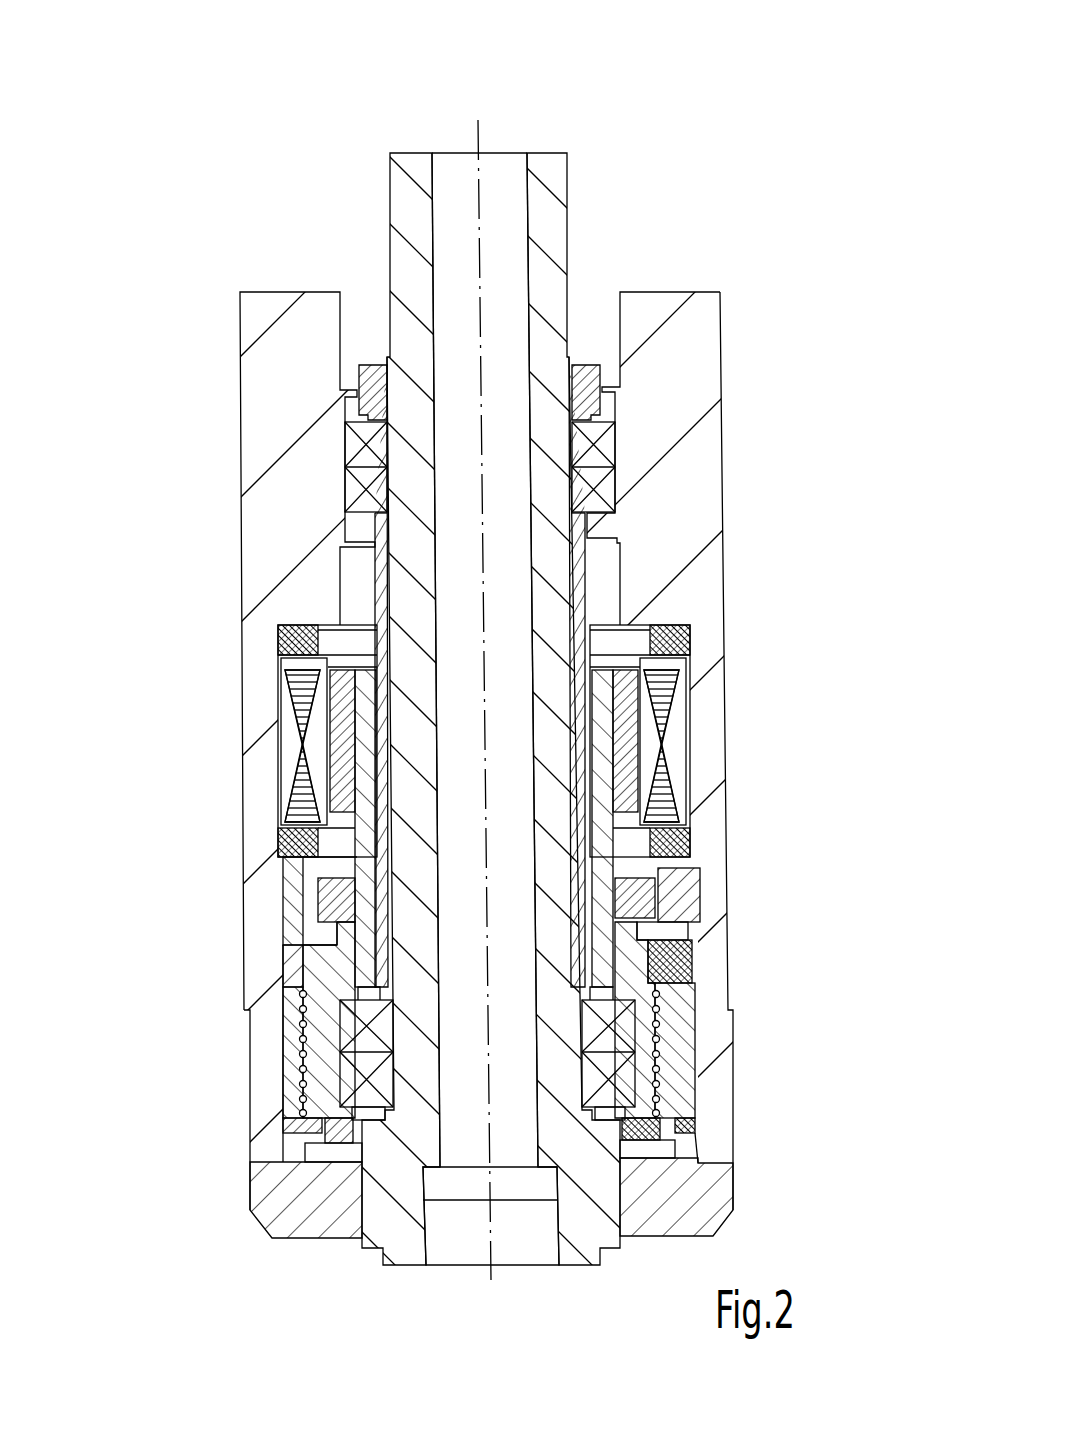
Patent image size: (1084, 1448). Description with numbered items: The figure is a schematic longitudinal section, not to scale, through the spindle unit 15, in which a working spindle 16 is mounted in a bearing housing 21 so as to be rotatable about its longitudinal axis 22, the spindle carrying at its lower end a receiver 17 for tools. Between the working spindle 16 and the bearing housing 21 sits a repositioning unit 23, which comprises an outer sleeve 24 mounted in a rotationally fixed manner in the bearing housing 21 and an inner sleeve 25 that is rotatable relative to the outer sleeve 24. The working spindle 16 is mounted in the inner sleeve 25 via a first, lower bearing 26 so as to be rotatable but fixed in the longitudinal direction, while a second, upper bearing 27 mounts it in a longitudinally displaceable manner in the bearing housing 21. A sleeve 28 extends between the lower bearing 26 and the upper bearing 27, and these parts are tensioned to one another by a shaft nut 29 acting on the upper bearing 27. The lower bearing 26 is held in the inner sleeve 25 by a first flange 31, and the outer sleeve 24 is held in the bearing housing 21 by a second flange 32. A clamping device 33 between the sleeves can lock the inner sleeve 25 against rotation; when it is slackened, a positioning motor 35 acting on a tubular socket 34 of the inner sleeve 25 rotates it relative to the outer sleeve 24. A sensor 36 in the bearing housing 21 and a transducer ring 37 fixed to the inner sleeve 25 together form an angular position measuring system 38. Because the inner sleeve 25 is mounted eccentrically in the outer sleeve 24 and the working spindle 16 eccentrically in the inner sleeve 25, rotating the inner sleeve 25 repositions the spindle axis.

The spindle unit 15 is at (712, 170).
The working spindle 16 is at (548, 240).
The receiver 17 is at (433, 1242).
The bearing housing 21 is at (680, 365).
The longitudinal axis 22 is at (484, 182).
The repositioning unit 23 is at (720, 985).
The outer sleeve 24 is at (668, 1110).
The inner sleeve 25 is at (252, 1208).
The lower bearing 26 is at (368, 1090).
The upper bearing 27 is at (596, 460).
The sleeve 28 is at (584, 571).
The shaft nut 29 is at (596, 358).
The first flange 31 is at (657, 1115).
The second flange 32 is at (707, 1208).
The clamping device 33 is at (283, 958).
The tubular socket 34 is at (340, 776).
The positioning motor 35 is at (322, 733).
The sensor 36 is at (622, 905).
The transducer ring 37 is at (323, 891).
The angular position measuring system 38 is at (706, 851).